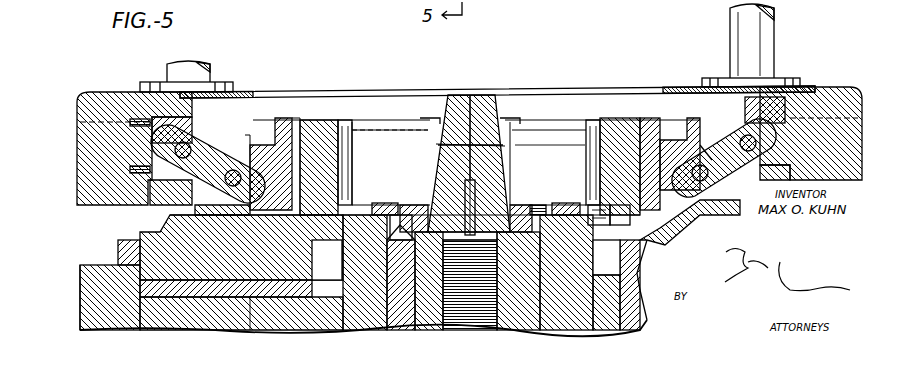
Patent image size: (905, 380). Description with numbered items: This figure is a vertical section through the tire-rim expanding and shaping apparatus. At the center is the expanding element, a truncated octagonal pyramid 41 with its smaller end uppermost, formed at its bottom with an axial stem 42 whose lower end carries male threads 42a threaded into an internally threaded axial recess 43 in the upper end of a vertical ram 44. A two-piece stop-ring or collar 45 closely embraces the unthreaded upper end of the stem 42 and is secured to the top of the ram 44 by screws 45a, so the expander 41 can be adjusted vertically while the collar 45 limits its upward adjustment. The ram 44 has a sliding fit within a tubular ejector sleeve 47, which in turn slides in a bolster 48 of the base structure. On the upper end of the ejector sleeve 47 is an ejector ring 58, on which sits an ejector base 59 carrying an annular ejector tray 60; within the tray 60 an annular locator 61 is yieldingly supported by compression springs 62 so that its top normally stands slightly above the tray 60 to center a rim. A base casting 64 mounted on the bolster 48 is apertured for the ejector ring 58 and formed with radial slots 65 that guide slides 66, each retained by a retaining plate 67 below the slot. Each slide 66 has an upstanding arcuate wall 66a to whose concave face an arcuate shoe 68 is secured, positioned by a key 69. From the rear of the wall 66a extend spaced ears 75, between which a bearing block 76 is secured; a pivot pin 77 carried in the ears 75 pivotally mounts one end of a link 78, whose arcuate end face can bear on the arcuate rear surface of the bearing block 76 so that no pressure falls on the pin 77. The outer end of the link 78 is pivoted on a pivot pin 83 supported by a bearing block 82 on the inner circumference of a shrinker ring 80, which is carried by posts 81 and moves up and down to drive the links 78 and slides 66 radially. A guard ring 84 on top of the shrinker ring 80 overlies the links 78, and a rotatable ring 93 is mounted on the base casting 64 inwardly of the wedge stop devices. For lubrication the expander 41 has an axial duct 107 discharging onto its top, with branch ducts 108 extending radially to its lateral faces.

The truncated octagonal pyramid 41 is at (484, 108).
The axial stem 42 is at (484, 232).
The male threads 42a is at (520, 205).
The internally threaded axial recess 43 is at (450, 322).
The vertical ram 44 is at (516, 322).
The two-piece stop-ring or collar 45 is at (412, 212).
The screws 45a is at (518, 212).
The tubular ejector sleeve 47 is at (406, 322).
The bolster 48 is at (240, 322).
The ejector ring 58 is at (360, 300).
The ejector base 59 is at (600, 212).
The annular ejector tray 60 is at (620, 215).
The annular locator 61 is at (540, 207).
The compression springs 62 is at (384, 205).
The base casting 64 is at (570, 322).
The radial slots 65 is at (340, 300).
The slides 66 is at (165, 228).
The upstanding arcuate walls 66a is at (650, 118).
The retaining plates 67 is at (160, 297).
The arcuate shoes 68 is at (345, 120).
The key 69 is at (312, 120).
The webs or ears 75 is at (262, 143).
The bearing block 76 is at (255, 125).
The pivot pin 77 is at (467, 217).
The link 78 is at (200, 182).
The shrinker ring 80 is at (832, 96).
The stilts or posts 81 is at (175, 72).
The bearing blocks 82 is at (118, 110).
The pivot pin 83 is at (196, 150).
The guard ring 84 is at (697, 86).
The ring 93 is at (382, 318).
The axial duct 107 is at (460, 160).
The branch ducts 108 is at (440, 140).